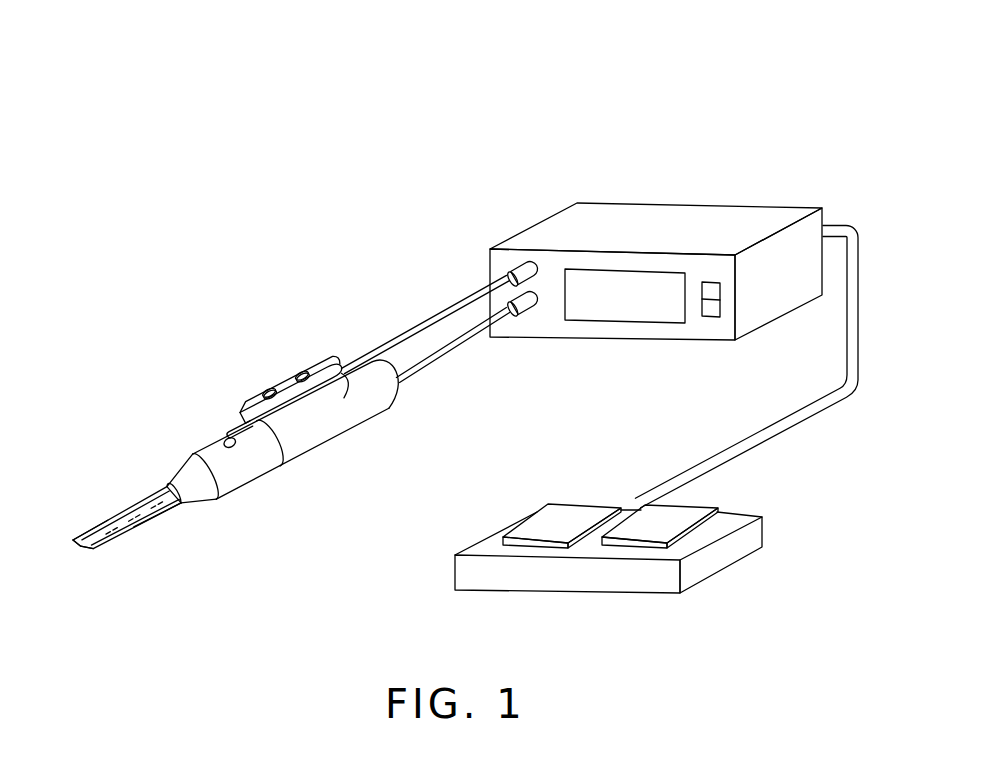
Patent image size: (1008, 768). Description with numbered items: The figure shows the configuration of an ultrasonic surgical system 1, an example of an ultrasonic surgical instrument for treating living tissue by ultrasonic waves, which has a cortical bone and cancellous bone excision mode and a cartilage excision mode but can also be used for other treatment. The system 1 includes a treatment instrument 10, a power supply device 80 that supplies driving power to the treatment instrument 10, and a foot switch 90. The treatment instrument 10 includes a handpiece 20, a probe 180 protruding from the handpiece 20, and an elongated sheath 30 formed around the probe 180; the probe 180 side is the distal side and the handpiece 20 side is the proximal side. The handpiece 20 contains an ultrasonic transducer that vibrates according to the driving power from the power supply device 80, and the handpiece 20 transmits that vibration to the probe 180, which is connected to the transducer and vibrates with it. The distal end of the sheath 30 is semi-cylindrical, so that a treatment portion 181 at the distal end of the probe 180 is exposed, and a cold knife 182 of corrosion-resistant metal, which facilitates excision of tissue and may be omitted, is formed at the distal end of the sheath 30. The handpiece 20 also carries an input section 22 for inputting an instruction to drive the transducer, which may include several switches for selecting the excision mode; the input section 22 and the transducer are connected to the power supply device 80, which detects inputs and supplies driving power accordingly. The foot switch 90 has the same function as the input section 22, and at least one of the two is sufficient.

The ultrasonic surgical system 1 is at (593, 97).
The treatment instrument 10 is at (215, 410).
The handpiece 20 is at (357, 418).
The input section 22 is at (295, 382).
The sheath 30 is at (128, 502).
The power supply device 80 is at (729, 203).
The foot switch 90 is at (688, 507).
The probe 180 is at (164, 516).
The treatment portion 181 is at (90, 554).
The cold knife 182 is at (86, 532).